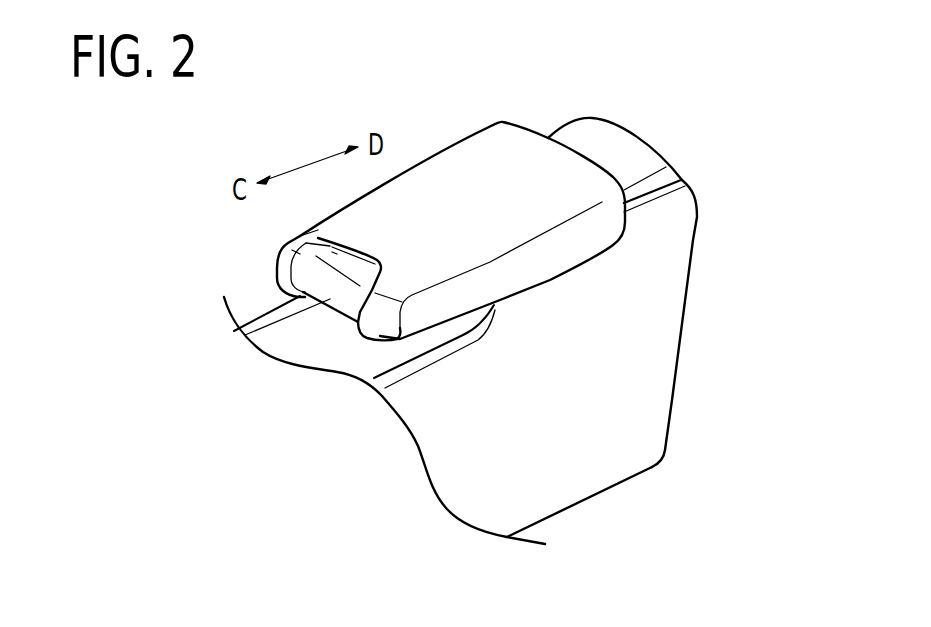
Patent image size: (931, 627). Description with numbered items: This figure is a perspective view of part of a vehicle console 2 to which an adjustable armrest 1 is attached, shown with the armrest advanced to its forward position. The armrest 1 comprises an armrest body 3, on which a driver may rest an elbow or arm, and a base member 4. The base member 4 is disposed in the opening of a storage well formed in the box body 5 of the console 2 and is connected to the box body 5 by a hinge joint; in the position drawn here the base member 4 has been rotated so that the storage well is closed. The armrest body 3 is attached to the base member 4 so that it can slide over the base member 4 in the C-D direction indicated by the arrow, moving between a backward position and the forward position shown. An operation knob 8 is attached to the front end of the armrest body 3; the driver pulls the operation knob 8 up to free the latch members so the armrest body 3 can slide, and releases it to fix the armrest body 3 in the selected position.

The armrest 1 is at (483, 123).
The vehicle console 2 is at (696, 306).
The armrest body 3 is at (502, 140).
The base member 4 is at (622, 148).
The box body 5 is at (566, 337).
The operation knob 8 is at (298, 237).